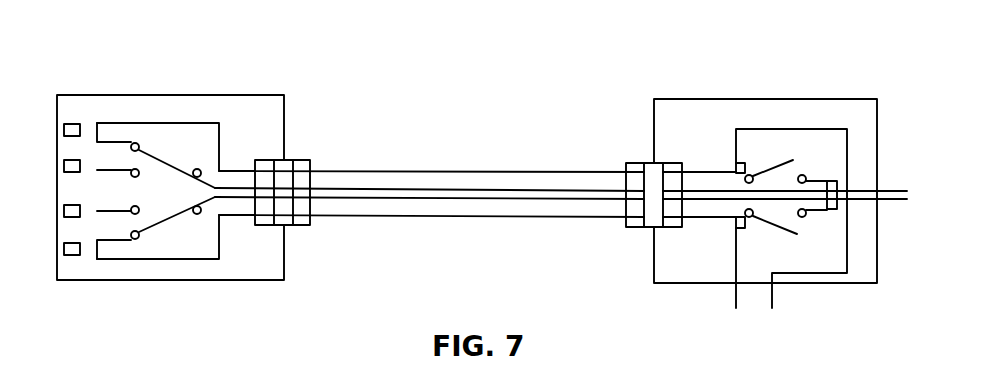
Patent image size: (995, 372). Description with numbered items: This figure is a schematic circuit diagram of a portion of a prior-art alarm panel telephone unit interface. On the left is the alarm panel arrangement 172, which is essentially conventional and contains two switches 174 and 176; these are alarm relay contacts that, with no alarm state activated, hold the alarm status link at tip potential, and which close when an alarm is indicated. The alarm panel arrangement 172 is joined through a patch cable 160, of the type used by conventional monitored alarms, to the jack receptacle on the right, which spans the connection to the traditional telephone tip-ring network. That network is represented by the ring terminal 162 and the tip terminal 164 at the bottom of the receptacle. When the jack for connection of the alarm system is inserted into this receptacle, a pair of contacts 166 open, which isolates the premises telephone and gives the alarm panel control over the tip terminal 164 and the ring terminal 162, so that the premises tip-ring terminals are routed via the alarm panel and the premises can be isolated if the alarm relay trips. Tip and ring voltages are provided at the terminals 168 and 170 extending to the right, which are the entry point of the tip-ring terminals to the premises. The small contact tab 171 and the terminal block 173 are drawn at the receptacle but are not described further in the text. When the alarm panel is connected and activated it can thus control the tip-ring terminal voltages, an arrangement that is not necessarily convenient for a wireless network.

The patch cable 160 is at (440, 170).
The ring terminal 162 is at (733, 302).
The tip terminal 164 is at (772, 302).
The pair of contacts 166 is at (770, 155).
The terminal 168 is at (897, 201).
The terminal 170 is at (892, 190).
The contact tab 171 is at (736, 164).
The alarm panel arrangement 172 is at (270, 89).
The terminal 173 is at (838, 182).
The switch 174 is at (150, 173).
The switch 176 is at (157, 221).